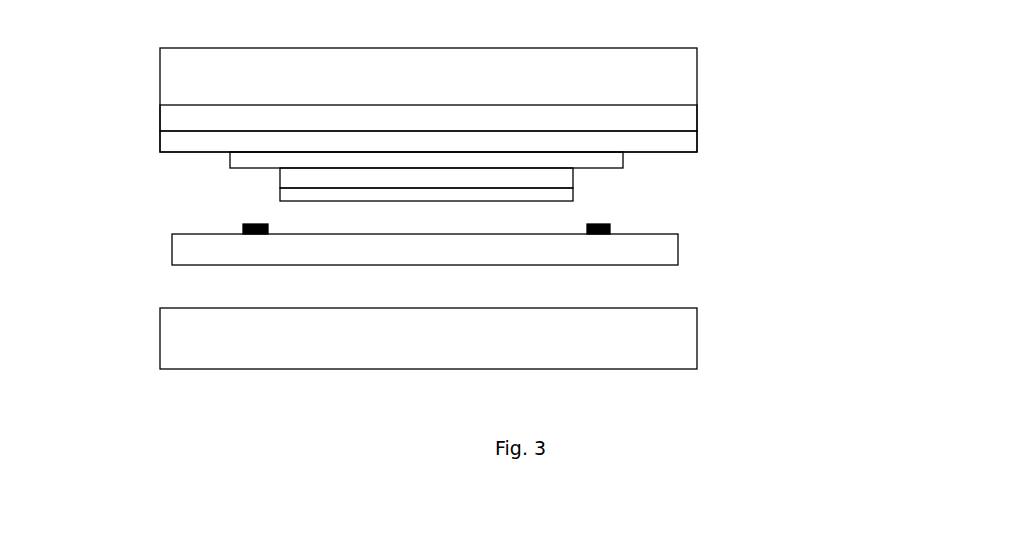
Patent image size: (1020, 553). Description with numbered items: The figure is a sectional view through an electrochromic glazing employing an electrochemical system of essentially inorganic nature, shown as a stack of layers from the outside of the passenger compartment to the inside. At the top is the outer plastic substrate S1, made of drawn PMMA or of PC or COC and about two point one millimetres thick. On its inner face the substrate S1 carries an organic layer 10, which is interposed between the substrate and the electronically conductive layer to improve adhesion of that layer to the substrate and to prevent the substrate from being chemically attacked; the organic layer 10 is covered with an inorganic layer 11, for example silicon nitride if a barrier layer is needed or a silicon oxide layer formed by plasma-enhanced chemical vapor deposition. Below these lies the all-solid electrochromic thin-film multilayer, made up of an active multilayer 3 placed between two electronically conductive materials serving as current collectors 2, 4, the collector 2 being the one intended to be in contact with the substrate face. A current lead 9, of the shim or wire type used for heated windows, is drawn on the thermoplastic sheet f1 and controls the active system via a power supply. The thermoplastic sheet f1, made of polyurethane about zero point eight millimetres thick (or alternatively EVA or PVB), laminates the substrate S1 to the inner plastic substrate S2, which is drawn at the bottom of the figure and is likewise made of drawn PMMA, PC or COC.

The plastic substrate S1 is at (157, 62).
The organic layer 10 is at (675, 125).
The inorganic layer 11 is at (175, 140).
The current collector 2 is at (625, 163).
The active multilayer 3 is at (575, 178).
The current collector 4 is at (573, 198).
The current lead 9 is at (620, 228).
The thermoplastic sheet f1 is at (680, 258).
The plastic substrate S2 is at (155, 340).